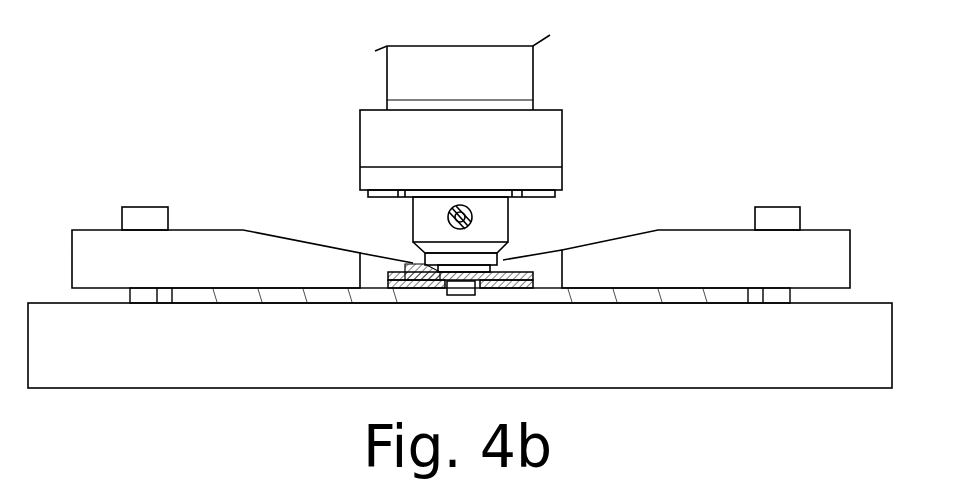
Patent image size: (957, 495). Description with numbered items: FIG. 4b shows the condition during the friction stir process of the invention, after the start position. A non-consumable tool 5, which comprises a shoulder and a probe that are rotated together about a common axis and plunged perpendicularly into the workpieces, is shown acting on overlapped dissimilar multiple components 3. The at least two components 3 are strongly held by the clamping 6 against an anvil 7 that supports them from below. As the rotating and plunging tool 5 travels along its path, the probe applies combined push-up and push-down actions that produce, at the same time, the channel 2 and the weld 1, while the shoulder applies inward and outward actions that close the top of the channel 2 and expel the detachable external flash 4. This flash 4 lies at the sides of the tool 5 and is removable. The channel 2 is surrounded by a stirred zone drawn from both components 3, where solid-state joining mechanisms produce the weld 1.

The weld 1 is at (483, 288).
The channel 2 is at (468, 294).
The overlapped dissimilar multiple components 3 is at (417, 282).
The detachable external flash 4 is at (413, 263).
The non-consumable tool 5 is at (495, 228).
The clamping 6 is at (250, 263).
The anvil 7 is at (148, 332).